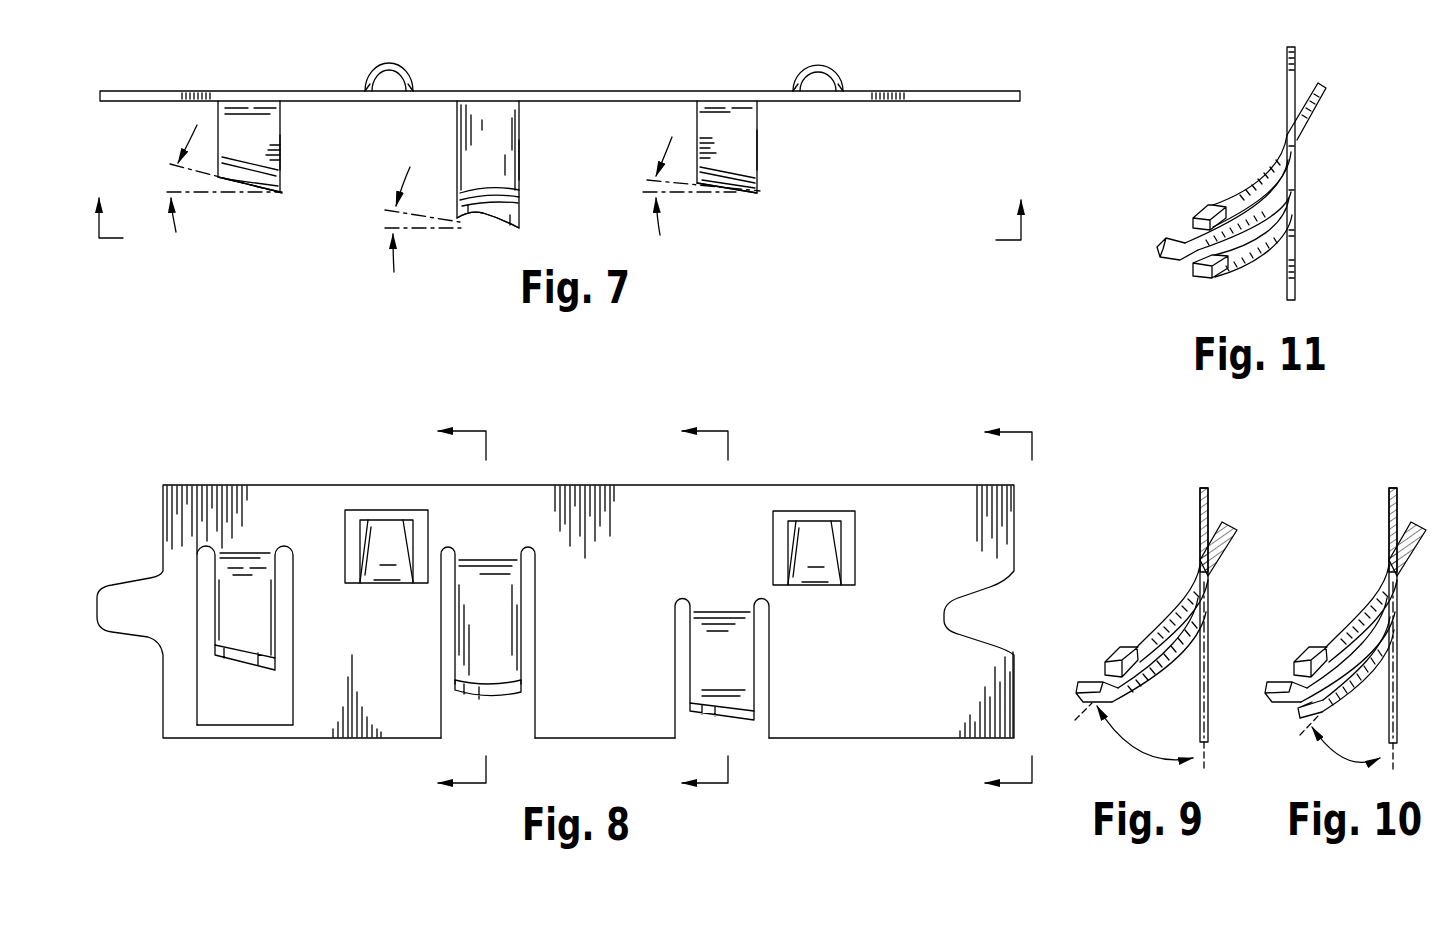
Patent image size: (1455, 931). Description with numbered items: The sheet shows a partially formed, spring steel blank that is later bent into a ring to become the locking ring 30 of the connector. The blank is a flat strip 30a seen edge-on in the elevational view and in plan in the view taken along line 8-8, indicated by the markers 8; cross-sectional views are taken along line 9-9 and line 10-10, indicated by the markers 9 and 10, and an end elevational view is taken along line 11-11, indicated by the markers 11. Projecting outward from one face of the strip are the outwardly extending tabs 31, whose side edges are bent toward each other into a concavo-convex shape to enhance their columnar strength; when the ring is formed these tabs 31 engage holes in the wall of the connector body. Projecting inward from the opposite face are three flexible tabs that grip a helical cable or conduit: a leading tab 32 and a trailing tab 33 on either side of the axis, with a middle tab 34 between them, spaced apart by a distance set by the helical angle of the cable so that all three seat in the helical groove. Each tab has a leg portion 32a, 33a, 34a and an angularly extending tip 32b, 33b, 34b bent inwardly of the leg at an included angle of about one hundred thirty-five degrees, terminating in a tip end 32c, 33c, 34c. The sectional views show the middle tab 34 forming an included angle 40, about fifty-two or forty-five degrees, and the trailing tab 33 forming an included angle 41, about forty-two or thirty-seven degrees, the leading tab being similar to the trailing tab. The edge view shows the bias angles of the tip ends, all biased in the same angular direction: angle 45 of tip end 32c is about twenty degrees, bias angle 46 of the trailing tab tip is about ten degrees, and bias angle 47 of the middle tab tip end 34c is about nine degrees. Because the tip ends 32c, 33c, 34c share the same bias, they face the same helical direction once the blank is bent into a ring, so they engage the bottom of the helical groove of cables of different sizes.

In FIG. 9, the locking ring 30 is at (1210, 690).
In FIG. 7, the base plate 30a is at (641, 90).
In FIG. 8, the base plate 30a is at (273, 484).
In FIG. 9, the base plate 30a is at (1200, 507).
In FIG. 10, the base plate 30a is at (1389, 510).
In FIG. 11, the base plate 30a is at (1287, 72).
In FIG. 7, the outwardly extending tabs 31 is at (395, 62).
In FIG. 8, the outwardly extending tabs 31 is at (385, 533).
In FIG. 7, the leading tab 32 is at (250, 125).
In FIG. 8, the leading tab 32 is at (227, 605).
In FIG. 9, the leading tab 32 is at (1169, 610).
In FIG. 10, the leading tab 32 is at (1368, 606).
In FIG. 11, the leading tab 32 is at (1237, 197).
In FIG. 7, the leg portion 32a is at (279, 155).
In FIG. 7, the tip 32b is at (262, 180).
In FIG. 7, the tip end 32c is at (250, 192).
In FIG. 8, the tip end 32c is at (248, 659).
In FIG. 7, the trailing tab 33 is at (740, 125).
In FIG. 8, the trailing tab 33 is at (732, 653).
In FIG. 10, the trailing tab 33 is at (1352, 684).
In FIG. 11, the trailing tab 33 is at (1229, 260).
In FIG. 7, the leg portion 33a is at (758, 153).
In FIG. 7, the tip 33b is at (750, 187).
In FIG. 7, the tip end 33c is at (733, 194).
In FIG. 8, the tip end 33c is at (725, 712).
In FIG. 7, the middle tab 34 is at (484, 138).
In FIG. 8, the middle tab 34 is at (482, 569).
In FIG. 9, the middle tab 34 is at (1130, 688).
In FIG. 10, the middle tab 34 is at (1301, 681).
In FIG. 11, the middle tab 34 is at (1183, 237).
In FIG. 7, the leg portion 34a is at (519, 163).
In FIG. 7, the tip 34b is at (519, 210).
In FIG. 7, the tip end 34c is at (493, 222).
In FIG. 8, the tip end 34c is at (474, 694).
In FIG. 9, the included angle 40 is at (1145, 736).
In FIG. 10, the included angle 41 is at (1346, 750).
In FIG. 7, the bias angle 45 is at (224, 193).
In FIG. 7, the bias angle 46 is at (701, 198).
In FIG. 7, the bias angle 47 is at (423, 232).
In FIG. 7, the line 8- 8 is at (561, 202).
In FIG. 8, the line 9- 9 is at (451, 609).
In FIG. 8, the line 10- 10 is at (690, 609).
In FIG. 8, the line 11- 11 is at (991, 609).